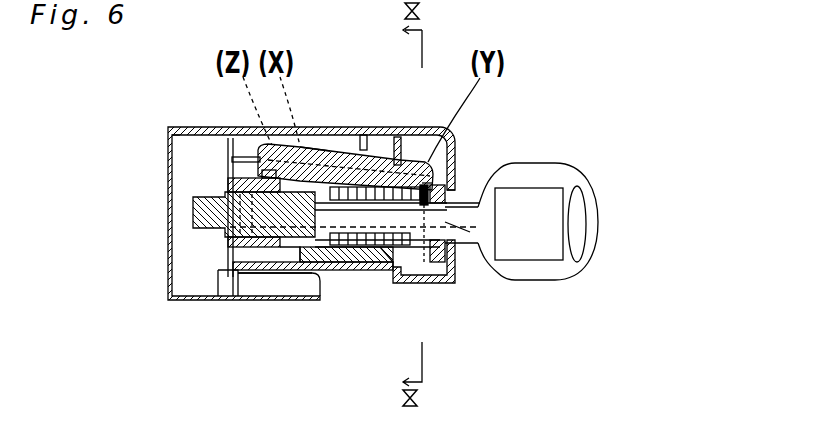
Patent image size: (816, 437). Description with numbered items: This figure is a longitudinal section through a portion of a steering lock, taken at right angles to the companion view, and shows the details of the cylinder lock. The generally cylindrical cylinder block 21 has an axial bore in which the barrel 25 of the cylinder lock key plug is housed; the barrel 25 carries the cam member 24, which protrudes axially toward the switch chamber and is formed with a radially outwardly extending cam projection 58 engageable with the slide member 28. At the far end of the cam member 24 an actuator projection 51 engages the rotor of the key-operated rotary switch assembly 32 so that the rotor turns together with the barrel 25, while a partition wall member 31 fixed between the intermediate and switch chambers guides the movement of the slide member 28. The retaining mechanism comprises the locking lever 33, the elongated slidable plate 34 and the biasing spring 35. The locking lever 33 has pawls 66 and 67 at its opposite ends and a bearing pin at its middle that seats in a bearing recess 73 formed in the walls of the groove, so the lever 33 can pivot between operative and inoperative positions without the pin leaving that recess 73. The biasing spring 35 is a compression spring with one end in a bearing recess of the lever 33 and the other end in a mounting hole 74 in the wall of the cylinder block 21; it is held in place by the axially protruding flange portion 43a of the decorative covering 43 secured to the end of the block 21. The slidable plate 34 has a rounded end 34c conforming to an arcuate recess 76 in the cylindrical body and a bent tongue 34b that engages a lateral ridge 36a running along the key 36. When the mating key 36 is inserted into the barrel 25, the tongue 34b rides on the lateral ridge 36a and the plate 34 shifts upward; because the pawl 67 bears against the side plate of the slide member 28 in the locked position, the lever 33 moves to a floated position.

The cylinder block 21 is at (232, 138).
The cam member 24 is at (318, 270).
The barrel 25 is at (334, 263).
The slide member 28 is at (228, 263).
The partition wall member 31 is at (228, 175).
The rotary switch assembly 32 is at (172, 134).
The locking lever 33 is at (318, 148).
The slidable plate 34 is at (442, 262).
The tongue 34b is at (447, 230).
The rounded end 34c is at (428, 263).
The biasing spring 35 is at (382, 186).
The key 36 is at (546, 204).
The lateral ridge 36a is at (458, 208).
The decorative covering 43 is at (455, 160).
The flange portion 43a is at (383, 150).
The actuator projection 51 is at (193, 206).
The cam projection 58 is at (290, 274).
The pawl 66 is at (455, 203).
The pawl 67 is at (232, 160).
The cam member 73 is at (356, 150).
The mounting hole 74 is at (400, 165).
The arcuate recess 76 is at (405, 284).